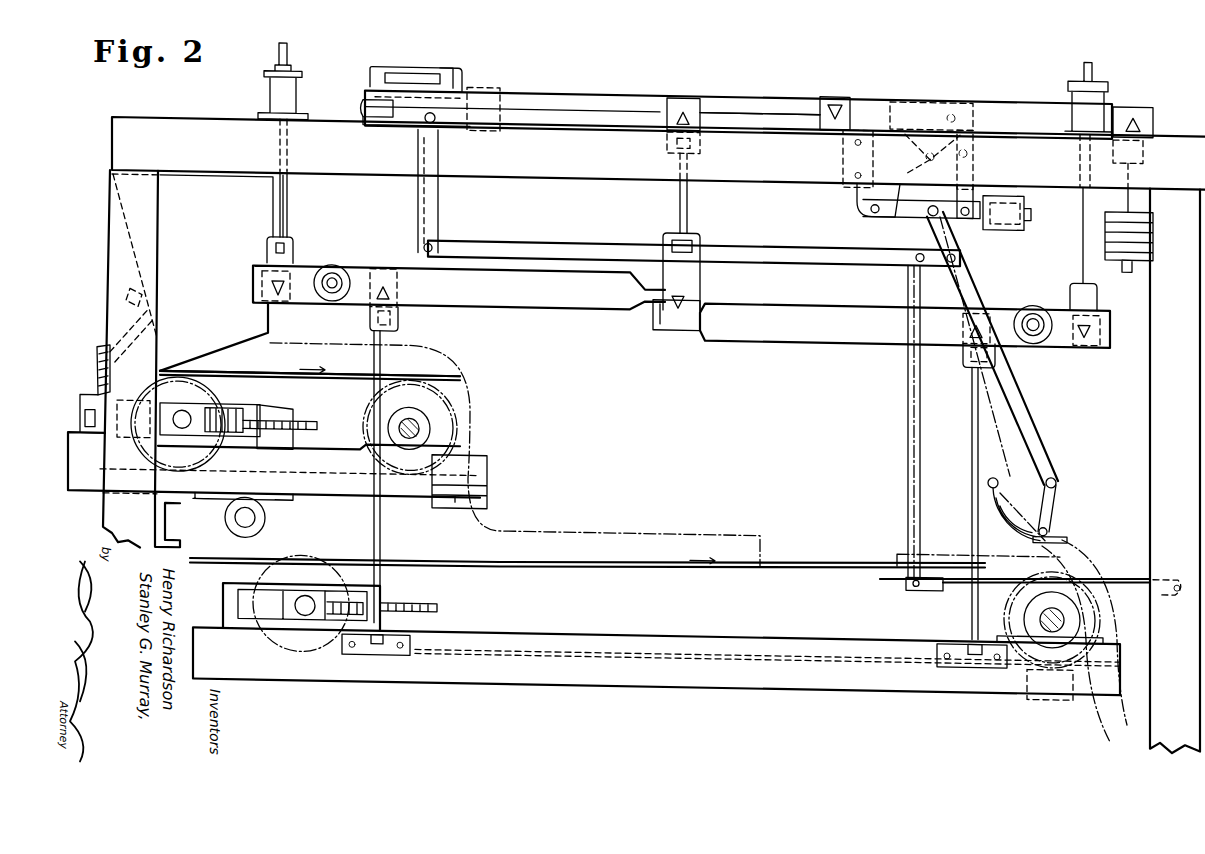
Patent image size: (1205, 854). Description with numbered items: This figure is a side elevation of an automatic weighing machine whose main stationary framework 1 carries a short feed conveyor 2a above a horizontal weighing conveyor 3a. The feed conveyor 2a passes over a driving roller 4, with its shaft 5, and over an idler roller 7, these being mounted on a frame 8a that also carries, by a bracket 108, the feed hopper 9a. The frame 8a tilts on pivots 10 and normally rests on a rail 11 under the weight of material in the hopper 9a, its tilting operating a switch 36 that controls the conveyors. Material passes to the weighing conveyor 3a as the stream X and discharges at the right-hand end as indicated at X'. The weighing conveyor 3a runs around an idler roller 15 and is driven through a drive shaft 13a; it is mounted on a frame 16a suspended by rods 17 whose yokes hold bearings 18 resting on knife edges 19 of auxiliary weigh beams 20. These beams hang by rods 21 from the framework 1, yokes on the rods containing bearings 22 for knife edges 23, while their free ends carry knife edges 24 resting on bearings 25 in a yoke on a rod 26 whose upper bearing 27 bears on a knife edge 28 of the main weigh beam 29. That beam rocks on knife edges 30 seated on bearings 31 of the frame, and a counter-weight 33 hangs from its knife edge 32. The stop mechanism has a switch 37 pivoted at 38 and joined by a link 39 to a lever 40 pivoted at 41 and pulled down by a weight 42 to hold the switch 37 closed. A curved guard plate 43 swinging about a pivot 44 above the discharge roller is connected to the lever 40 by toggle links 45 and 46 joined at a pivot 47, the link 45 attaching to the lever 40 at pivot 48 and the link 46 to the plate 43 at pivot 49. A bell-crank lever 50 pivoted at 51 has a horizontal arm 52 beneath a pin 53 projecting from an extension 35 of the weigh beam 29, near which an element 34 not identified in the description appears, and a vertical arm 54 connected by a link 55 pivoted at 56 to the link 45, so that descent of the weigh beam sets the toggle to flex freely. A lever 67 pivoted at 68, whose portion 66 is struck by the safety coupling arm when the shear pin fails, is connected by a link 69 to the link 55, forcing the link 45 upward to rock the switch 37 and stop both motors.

The framework 1 is at (126, 292).
The bracket 108 is at (98, 378).
The feed conveyor 2a is at (243, 368).
The weighing conveyor 3a is at (800, 563).
The driving roller 4 is at (362, 396).
The shaft 5 is at (408, 412).
The idler roller 7 is at (210, 390).
The frame 8a is at (352, 488).
The feed hopper 9a is at (258, 216).
The pivots 10 is at (240, 522).
The rail 11 is at (180, 521).
The drive shaft 13a is at (1052, 606).
The idler roller 15 is at (305, 610).
The frame 16a is at (695, 676).
The rods 17 is at (380, 538).
The bearings 18 is at (383, 268).
The knife edges 19 is at (372, 300).
The auxiliary weigh beams 20 is at (538, 296).
The rods 21 is at (288, 224).
The bearings 22 is at (289, 300).
The knife edges 23 is at (290, 274).
The knife edges 24 is at (702, 280).
The bearings 25 is at (652, 305).
The rod 26 is at (688, 205).
The bearing 27 is at (690, 100).
The knife edge 28 is at (676, 124).
The main weigh beam 29 is at (765, 100).
The knife edge 30 is at (838, 90).
The bearing 31 is at (850, 112).
The knife edge 32 is at (1150, 102).
The counter-weight 33 is at (1112, 200).
The hook plate 34 is at (460, 62).
The extension 35 is at (540, 96).
The switch 36 is at (490, 480).
The switch 37 is at (930, 100).
The pivot 38 is at (925, 143).
The link 39 is at (973, 180).
The lever 40 is at (900, 204).
The pivot 41 is at (866, 193).
The weight 42 is at (1012, 214).
The guard plate 43 is at (1010, 524).
The pivot 44 is at (998, 470).
The link 45 is at (1030, 418).
The link 46 is at (1030, 510).
The pivot 47 is at (1057, 462).
The pivot 48 is at (935, 200).
The pivot 49 is at (1048, 514).
The bell-crank lever 50 is at (395, 122).
The pivot 51 is at (436, 116).
The horizontal arm 52 is at (360, 102).
The pin 53 is at (370, 86).
The vertical arm 54 is at (418, 205).
The link 55 is at (588, 240).
The pivot 56 is at (958, 242).
The portion of lever 66 is at (1020, 592).
The lever 67 is at (1118, 577).
The pivot 68 is at (1176, 572).
The link 69 is at (908, 400).
The stream of material X is at (847, 534).
The discharging material X' is at (1084, 635).